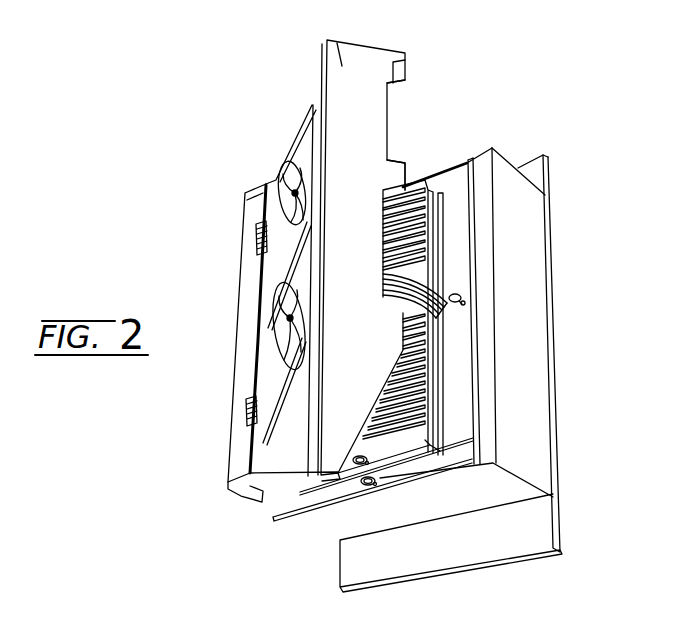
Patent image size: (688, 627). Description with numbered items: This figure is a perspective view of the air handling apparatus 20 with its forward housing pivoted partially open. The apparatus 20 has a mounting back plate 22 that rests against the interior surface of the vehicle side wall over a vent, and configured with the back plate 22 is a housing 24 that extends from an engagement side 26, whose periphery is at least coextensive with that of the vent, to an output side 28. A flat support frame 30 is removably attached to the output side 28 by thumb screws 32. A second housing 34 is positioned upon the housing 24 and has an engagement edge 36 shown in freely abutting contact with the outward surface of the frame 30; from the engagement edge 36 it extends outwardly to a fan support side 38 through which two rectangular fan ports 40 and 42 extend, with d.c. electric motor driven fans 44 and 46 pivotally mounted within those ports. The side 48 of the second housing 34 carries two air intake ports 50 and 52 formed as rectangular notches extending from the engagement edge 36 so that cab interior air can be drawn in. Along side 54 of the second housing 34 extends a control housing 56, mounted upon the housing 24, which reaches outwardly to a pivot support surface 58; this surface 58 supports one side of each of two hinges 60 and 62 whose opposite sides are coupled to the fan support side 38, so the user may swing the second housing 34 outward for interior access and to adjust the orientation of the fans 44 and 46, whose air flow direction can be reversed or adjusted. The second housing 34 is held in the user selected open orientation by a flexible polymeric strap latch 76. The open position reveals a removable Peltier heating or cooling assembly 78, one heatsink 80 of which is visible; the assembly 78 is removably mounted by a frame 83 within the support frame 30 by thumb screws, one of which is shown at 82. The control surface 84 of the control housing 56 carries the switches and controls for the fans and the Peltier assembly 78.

The air handling apparatus 20 is at (487, 323).
The mounting back plate 22 is at (540, 523).
The housing portion 24 is at (518, 216).
The engagement side 26 is at (560, 418).
The output side 28 is at (523, 137).
The support frame 30 is at (455, 173).
The thumb screws 32 is at (363, 483).
The second housing portion 34 is at (380, 240).
The engagement edge 36 is at (403, 66).
The fan support side 38 is at (251, 294).
The fan port 40 is at (309, 112).
The fan port 42 is at (252, 455).
The electric motor driven fan 44 is at (283, 185).
The electric motor driven fan 46 is at (268, 343).
The side of second housing 48 is at (342, 66).
The air intake port 50 is at (397, 72).
The air intake port 52 is at (392, 188).
The side of housing 54 is at (280, 517).
The control housing 56 is at (214, 333).
The pivot support surface 58 is at (248, 321).
The hinge 60 is at (254, 238).
The hinge 62 is at (245, 408).
The latch 76 is at (433, 280).
The Peltier heating or cooling assembly 78 is at (446, 358).
The heatsink 80 is at (448, 362).
The thumb screw 82 is at (368, 458).
The frame 83 is at (430, 447).
The control surface 84 is at (240, 497).